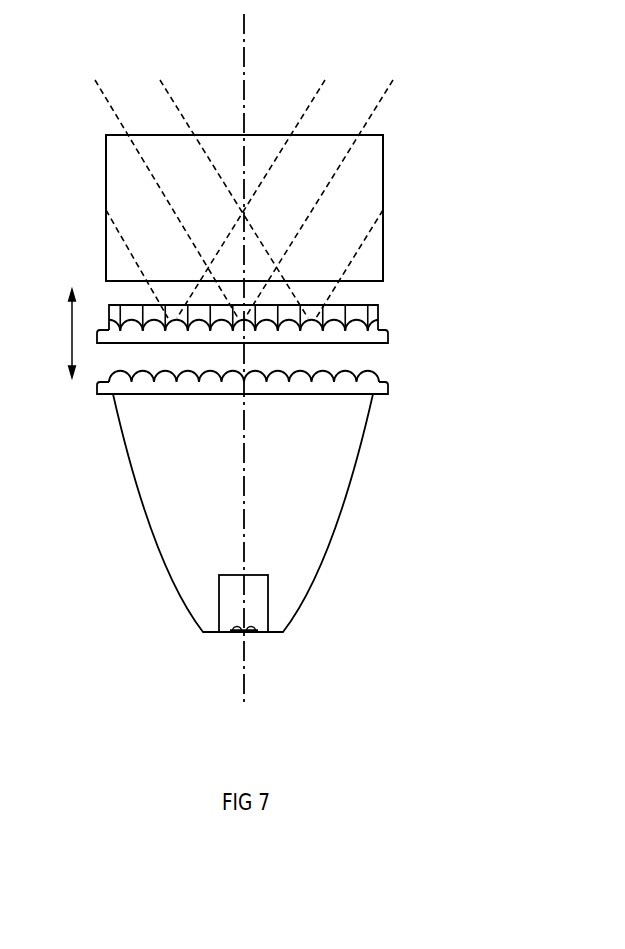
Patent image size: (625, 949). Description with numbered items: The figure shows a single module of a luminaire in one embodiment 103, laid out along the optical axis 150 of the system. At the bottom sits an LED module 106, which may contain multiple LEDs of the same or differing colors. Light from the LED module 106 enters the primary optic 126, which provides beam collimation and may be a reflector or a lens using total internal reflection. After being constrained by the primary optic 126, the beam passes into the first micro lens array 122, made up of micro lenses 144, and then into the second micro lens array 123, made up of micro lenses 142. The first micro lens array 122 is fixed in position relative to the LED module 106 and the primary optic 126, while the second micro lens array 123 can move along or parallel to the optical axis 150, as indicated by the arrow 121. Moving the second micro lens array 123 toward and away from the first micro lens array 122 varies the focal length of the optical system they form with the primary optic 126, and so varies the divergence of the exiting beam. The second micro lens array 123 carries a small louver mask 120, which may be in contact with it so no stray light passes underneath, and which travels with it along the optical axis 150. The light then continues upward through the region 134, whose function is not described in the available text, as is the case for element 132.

The embodiment 103 is at (261, 526).
The LED module 106 is at (246, 631).
The small louver mask 120 is at (286, 328).
The arrow indicating movement 121 is at (56, 333).
The first micro lens array 122 is at (277, 404).
The second micro lens array 123 is at (388, 336).
The primary optic 126 is at (344, 517).
The lens elements of first lens array 132 is at (357, 313).
The output region / target plane 134 is at (383, 170).
The micro lenses 142 is at (354, 329).
The micro lenses 144 is at (347, 380).
The optical axis 150 is at (245, 21).